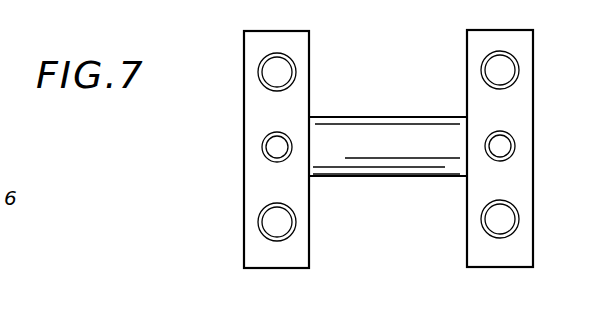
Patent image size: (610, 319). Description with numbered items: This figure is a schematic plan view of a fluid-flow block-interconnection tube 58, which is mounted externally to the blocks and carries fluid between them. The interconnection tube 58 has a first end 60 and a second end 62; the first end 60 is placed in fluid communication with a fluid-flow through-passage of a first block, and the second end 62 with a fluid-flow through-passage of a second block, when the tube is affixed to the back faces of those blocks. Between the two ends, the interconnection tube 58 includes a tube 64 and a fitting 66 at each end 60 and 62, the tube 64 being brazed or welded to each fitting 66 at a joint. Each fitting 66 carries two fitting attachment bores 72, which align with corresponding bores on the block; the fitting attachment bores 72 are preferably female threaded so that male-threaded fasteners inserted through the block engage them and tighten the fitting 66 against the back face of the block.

The fluid-flow block-interconnection tube 58 is at (384, 117).
The first end 60 is at (264, 145).
The second end 62 is at (512, 138).
The tube 64 is at (403, 177).
The fitting 66 is at (244, 176).
The fitting attachment bore 72 is at (513, 232).